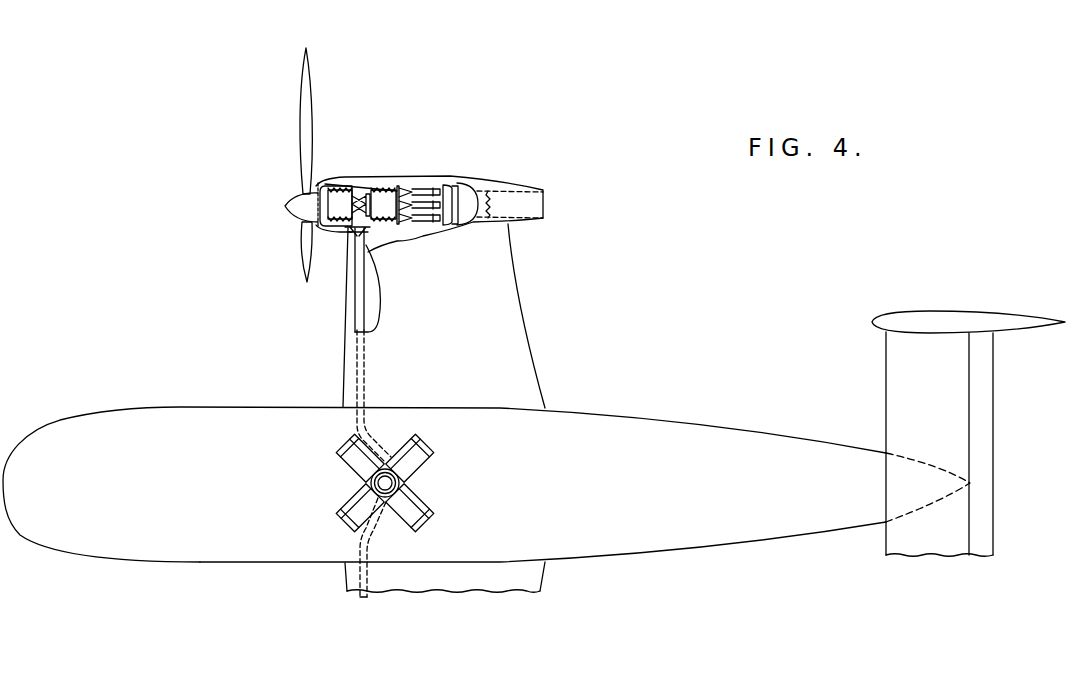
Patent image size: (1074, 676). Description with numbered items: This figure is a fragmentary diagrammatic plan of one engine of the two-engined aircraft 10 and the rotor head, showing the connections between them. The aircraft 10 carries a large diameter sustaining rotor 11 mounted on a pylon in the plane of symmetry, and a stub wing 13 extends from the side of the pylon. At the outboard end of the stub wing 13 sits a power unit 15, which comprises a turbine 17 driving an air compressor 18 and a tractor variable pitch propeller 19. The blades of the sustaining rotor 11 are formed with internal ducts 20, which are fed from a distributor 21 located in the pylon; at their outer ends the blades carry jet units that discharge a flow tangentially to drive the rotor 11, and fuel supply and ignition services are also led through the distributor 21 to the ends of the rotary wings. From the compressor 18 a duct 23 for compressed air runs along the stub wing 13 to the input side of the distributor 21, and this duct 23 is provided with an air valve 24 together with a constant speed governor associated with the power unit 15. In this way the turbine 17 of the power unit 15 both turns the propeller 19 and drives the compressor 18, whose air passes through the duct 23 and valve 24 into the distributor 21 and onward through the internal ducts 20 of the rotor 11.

The aircraft 10 is at (263, 420).
The sustaining rotor 11 is at (387, 483).
The stub wing 13 is at (397, 290).
The power unit 15 is at (449, 178).
The turbine 17 is at (432, 188).
The air compressor 18 is at (383, 188).
The tractor variable pitch propeller 19 is at (300, 106).
The internal ducts 20 is at (355, 447).
The distributor 21 is at (412, 482).
The duct 23 is at (360, 318).
The air valve 24 is at (362, 237).